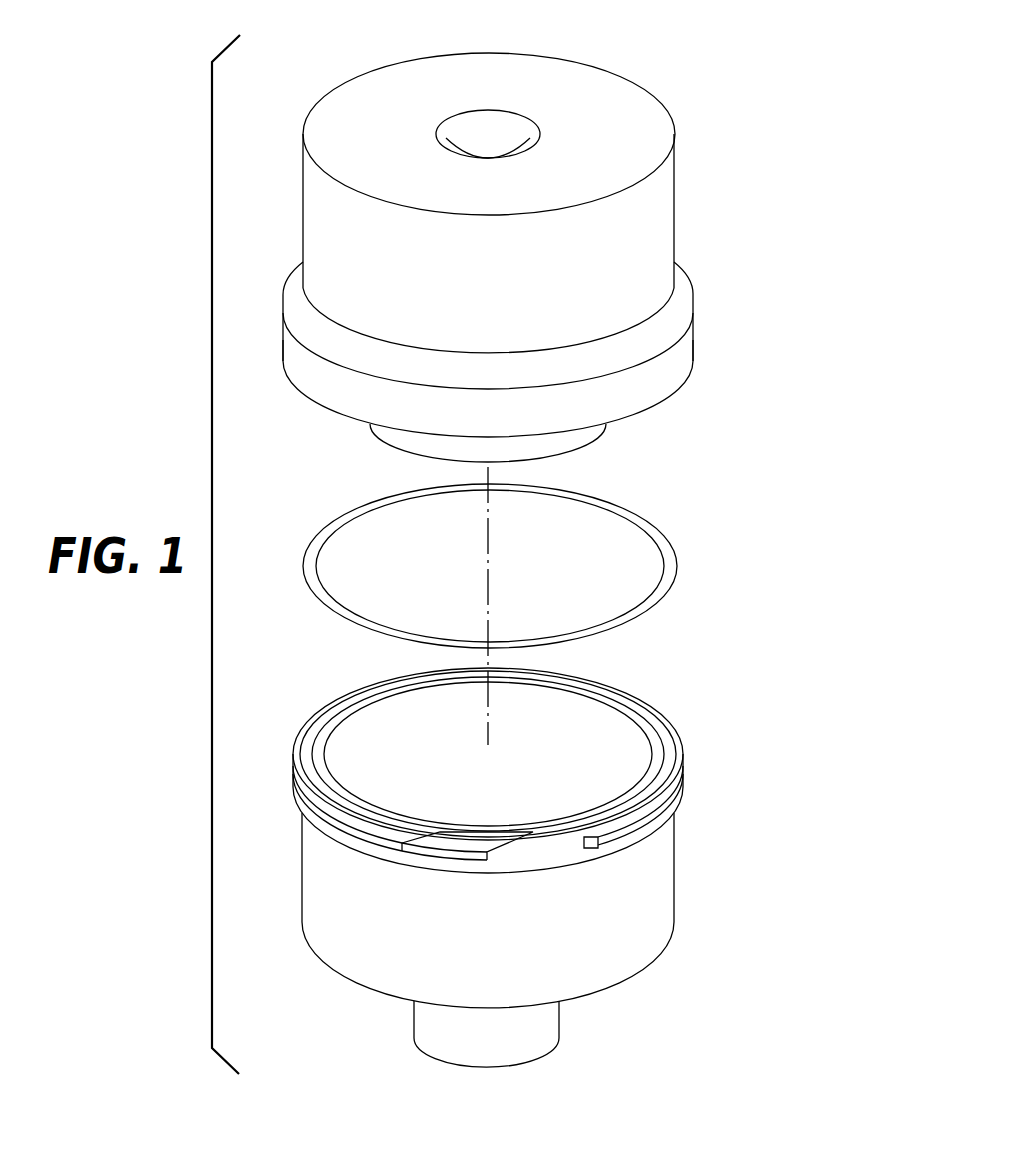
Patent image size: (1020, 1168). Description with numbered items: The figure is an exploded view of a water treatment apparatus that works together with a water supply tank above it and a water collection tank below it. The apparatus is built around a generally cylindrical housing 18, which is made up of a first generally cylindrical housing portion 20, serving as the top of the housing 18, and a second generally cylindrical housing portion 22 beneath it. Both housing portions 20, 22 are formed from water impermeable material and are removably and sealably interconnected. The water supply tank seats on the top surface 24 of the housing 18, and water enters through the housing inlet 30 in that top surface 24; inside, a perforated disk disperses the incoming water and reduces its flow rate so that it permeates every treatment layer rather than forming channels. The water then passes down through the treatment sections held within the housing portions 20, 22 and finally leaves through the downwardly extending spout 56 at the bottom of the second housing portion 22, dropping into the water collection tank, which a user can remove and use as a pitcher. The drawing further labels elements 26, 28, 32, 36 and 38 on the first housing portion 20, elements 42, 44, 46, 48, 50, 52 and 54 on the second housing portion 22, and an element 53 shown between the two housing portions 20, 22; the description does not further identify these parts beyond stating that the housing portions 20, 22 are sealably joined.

The housing 18 is at (736, 442).
The first generally cylindrical housing portion 20 is at (684, 179).
The second generally cylindrical housing portion 22 is at (684, 920).
The top surface 24 is at (627, 130).
The cylindrical side wall of cap 26 is at (640, 235).
The flange 28 is at (328, 407).
The housing inlet 30 is at (448, 130).
The boss 32 is at (383, 445).
The upper flange portion 36 is at (680, 293).
The lower flange portion 38 is at (695, 333).
The side wall of base 42 is at (635, 953).
The bottom wall of base 44 is at (560, 1005).
The rim 46 is at (678, 815).
The top face of rim 48 is at (683, 755).
The tab 50 is at (430, 845).
The slot 52 is at (600, 842).
The O-ring seal 53 is at (675, 545).
The bottom boss 54 is at (414, 1025).
The downwardly extending spout 56 is at (460, 1068).